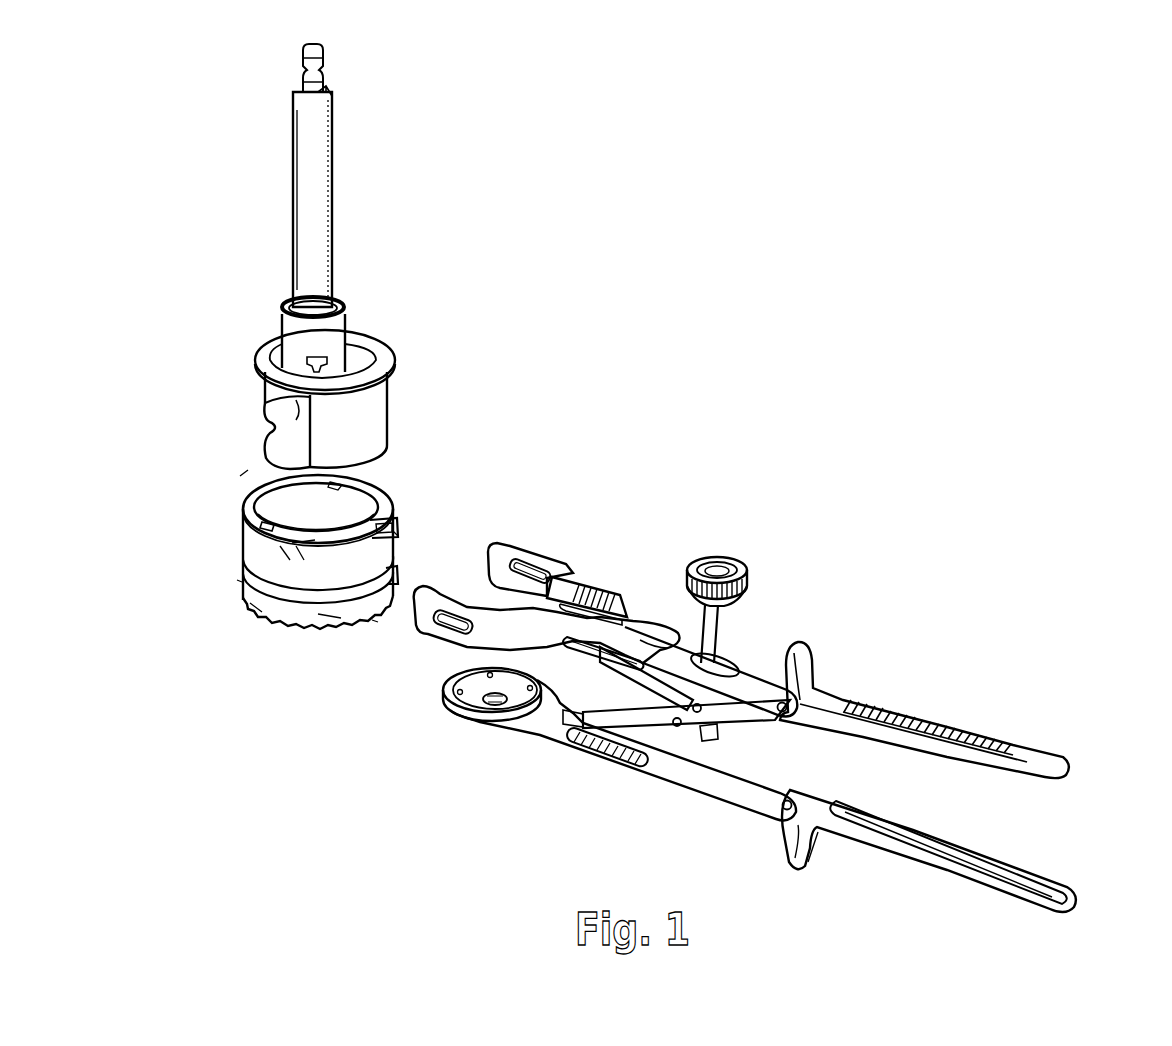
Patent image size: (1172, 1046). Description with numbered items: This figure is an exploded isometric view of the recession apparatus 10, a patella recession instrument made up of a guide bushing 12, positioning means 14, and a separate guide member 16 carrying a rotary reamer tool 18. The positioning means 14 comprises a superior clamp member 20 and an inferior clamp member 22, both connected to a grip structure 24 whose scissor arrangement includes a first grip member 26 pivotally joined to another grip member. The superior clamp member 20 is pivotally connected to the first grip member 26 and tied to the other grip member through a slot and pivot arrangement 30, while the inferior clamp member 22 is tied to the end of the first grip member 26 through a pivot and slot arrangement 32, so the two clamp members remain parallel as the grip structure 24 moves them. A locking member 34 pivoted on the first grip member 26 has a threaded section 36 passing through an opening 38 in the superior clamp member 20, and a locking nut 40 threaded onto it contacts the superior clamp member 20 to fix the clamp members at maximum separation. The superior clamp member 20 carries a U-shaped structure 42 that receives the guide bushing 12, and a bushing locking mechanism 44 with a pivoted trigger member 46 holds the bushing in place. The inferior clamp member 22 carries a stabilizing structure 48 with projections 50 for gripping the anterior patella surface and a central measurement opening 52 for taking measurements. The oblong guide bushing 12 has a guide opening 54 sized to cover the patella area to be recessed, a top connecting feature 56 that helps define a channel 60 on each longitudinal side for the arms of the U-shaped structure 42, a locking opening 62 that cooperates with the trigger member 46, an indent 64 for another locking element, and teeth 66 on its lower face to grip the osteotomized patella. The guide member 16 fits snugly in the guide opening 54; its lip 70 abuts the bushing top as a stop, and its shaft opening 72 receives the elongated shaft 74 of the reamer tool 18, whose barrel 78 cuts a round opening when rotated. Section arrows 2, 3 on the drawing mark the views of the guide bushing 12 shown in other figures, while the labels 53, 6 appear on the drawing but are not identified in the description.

The recession apparatus 10 is at (610, 405).
The guide bushing 12 is at (386, 492).
The positioning means 14 is at (567, 826).
The guide member 16 is at (388, 392).
The rotary reamer tool 18 is at (300, 178).
The superior clamp member 20 is at (765, 672).
The inferior clamp member 22 is at (685, 773).
The grip structure 24 is at (1000, 705).
The first grip member 26 is at (866, 735).
The slot and pivot arrangement 30 is at (595, 655).
The pivot and slot arrangement 32 is at (593, 753).
The locking member 34 is at (690, 628).
The threaded section 36 is at (726, 640).
The opening 38 is at (738, 665).
The locking nut 40 is at (730, 555).
The U-shaped structure 42 is at (510, 535).
The bushing locking mechanism 44 is at (575, 546).
The trigger member 46 is at (612, 590).
The stabilizing structure 48 is at (470, 721).
The projections 50 is at (455, 701).
The measurement opening 52 is at (493, 704).
The slot 53 is at (303, 543).
The guide opening 54 is at (322, 497).
The top connecting feature 56 is at (286, 543).
The channel 60 is at (282, 562).
The locking opening 62 is at (392, 512).
The indent 64 is at (400, 541).
The teeth 66 is at (262, 612).
The lip 70 is at (388, 340).
The shaft opening 72 is at (340, 298).
The elongated shaft 74 is at (334, 222).
The barrel 78 is at (270, 421).
The section line 2 is at (193, 568).
The section line 3 is at (252, 462).
The pivot link 6 is at (742, 732).